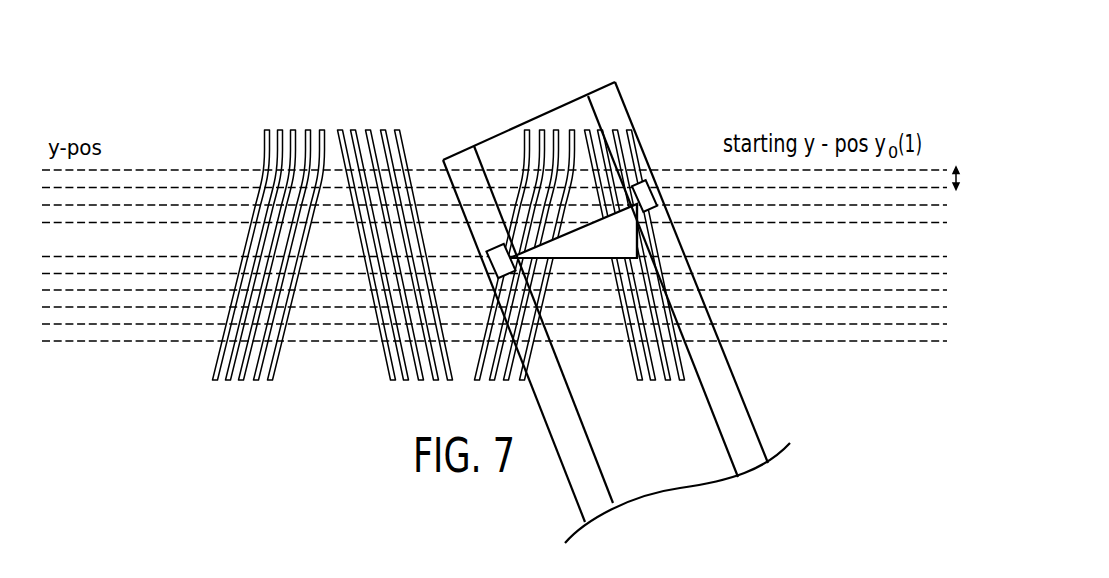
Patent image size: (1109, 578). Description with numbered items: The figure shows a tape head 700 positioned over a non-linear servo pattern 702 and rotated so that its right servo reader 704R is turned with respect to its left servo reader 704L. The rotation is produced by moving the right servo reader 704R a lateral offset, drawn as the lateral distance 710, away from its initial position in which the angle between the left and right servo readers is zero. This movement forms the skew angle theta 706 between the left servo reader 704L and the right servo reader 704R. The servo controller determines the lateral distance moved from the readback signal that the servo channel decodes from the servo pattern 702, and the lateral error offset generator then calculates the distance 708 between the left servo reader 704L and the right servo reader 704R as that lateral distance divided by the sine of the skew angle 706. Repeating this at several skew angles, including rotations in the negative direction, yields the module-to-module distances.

The tape head 700 is at (615, 82).
The non-linear servo pattern 702 is at (650, 137).
The left servo reader 704L is at (488, 258).
The right servo reader 704R is at (652, 197).
The skew angle 706 is at (565, 245).
The distance between left and right servo readers 708 is at (571, 104).
The lateral distance 710 is at (637, 253).